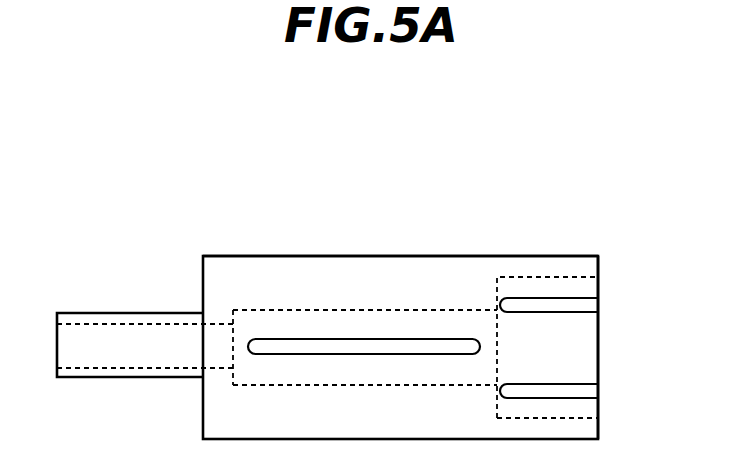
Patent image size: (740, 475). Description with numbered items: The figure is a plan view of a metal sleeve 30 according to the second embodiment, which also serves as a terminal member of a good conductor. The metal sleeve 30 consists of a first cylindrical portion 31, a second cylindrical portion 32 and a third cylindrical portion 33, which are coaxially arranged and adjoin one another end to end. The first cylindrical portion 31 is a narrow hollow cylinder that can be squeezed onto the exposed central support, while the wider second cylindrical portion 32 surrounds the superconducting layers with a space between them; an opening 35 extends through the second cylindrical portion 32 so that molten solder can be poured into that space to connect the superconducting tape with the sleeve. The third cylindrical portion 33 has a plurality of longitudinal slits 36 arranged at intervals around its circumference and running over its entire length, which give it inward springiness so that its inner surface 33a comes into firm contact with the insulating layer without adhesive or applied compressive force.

The metal sleeve 30 is at (457, 221).
The first cylindrical portion 31 is at (125, 312).
The second cylindrical portion 32 is at (270, 255).
The third cylindrical portion 33 is at (552, 256).
The inner surface of the third cylindrical portion 33a is at (547, 278).
The opening 35 is at (418, 347).
The longitudinal slits 36 is at (572, 305).